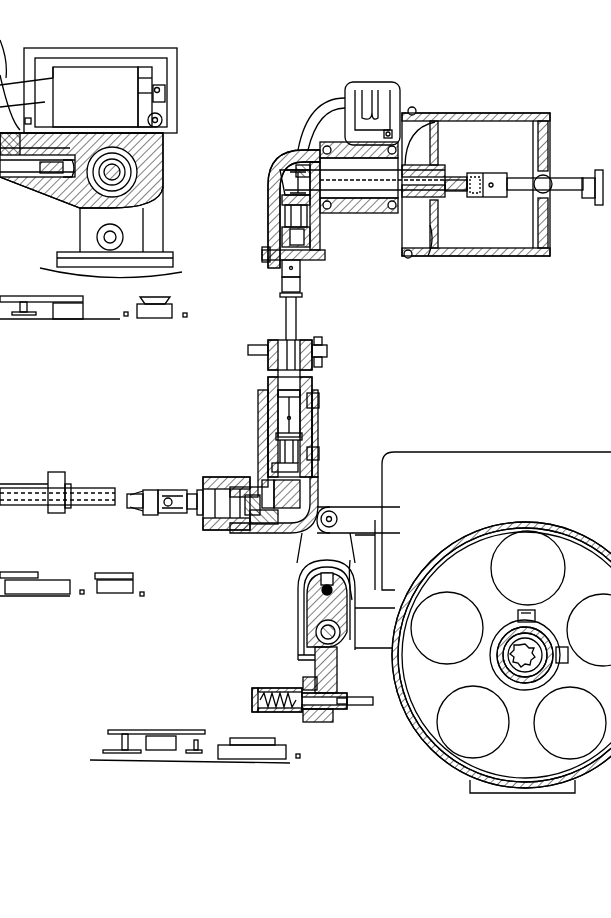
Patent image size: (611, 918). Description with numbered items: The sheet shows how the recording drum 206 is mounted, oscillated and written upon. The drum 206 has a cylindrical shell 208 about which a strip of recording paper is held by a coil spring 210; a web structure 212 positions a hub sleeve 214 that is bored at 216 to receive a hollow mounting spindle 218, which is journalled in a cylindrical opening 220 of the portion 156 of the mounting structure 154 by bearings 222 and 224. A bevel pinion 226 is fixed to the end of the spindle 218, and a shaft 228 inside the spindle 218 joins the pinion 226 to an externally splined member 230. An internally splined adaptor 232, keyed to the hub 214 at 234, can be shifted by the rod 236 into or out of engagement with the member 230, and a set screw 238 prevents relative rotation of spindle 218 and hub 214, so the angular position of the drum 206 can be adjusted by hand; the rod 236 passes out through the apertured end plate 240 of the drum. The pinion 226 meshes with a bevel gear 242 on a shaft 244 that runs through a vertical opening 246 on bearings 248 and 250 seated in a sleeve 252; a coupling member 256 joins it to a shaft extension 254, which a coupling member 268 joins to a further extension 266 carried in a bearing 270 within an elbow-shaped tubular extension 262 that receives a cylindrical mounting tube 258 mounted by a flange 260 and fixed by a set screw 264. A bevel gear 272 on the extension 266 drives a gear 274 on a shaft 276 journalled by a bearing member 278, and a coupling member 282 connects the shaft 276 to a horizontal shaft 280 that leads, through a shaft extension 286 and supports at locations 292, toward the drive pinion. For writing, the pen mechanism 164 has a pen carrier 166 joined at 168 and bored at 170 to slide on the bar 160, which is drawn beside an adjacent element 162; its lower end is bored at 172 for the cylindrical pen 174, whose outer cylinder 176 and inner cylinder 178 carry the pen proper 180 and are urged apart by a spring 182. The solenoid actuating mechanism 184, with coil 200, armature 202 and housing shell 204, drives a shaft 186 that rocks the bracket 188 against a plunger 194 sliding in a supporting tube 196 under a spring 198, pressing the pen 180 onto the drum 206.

In FIG. 6, the mounting structure 154 is at (148, 160).
In FIG. 8, the mounting structure portion 156 is at (345, 213).
In FIG. 8, the bar 160 is at (318, 624).
In FIG. 8, the housing inner wall 162 is at (325, 640).
In FIG. 8, the pen mechanism 164 is at (295, 658).
In FIG. 8, the pen carrier 166 is at (338, 666).
In FIG. 8, the joint 168 is at (335, 585).
In FIG. 8, the bore 170 is at (338, 634).
In FIG. 8, the bore 172 is at (320, 722).
In FIG. 8, the cylindrical pen 174 is at (297, 722).
In FIG. 8, the outer cylinder 176 is at (340, 695).
In FIG. 8, the inner cylinder 178 is at (352, 708).
In FIG. 8, the pen proper 180 is at (368, 700).
In FIG. 8, the spring 182 is at (255, 712).
In FIG. 6, the solenoid actuating mechanism 184 is at (112, 50).
In FIG. 8, the solenoid actuating mechanism 184 is at (497, 496).
In FIG. 8, the shaft 186 is at (355, 508).
In FIG. 8, the bracket 188 is at (318, 540).
In FIG. 6, the plunger 194 is at (30, 178).
In FIG. 6, the supporting tube 196 is at (45, 175).
In FIG. 6, the spring 198 is at (68, 178).
In FIG. 6, the solenoid coil 200 is at (112, 99).
In FIG. 6, the movable armature 202 is at (160, 72).
In FIG. 8, the movable armature 202 is at (590, 530).
In FIG. 6, the housing shell 204 is at (176, 98).
In FIG. 8, the recording drum 206 is at (488, 258).
In FIG. 8, the cylindrical shell 208 is at (510, 114).
In FIG. 8, the coil spring 210 is at (420, 105).
In FIG. 8, the web structure 212 is at (428, 238).
In FIG. 8, the hub sleeve 214 is at (474, 178).
In FIG. 8, the axial bore 216 is at (460, 197).
In FIG. 8, the mounting spindle 218 is at (421, 184).
In FIG. 8, the cylindrical opening 220 is at (362, 205).
In FIG. 8, the bearing 222 is at (380, 213).
In FIG. 8, the bearing 224 is at (330, 215).
In FIG. 8, the bevel pinion 226 is at (270, 176).
In FIG. 8, the shaft 228 is at (442, 172).
In FIG. 8, the externally splined member 230 is at (460, 176).
In FIG. 8, the internally splined adaptor 232 is at (500, 200).
In FIG. 8, the key 234 is at (548, 162).
In FIG. 8, the rod 236 is at (587, 178).
In FIG. 8, the set screw 238 is at (400, 130).
In FIG. 8, the end wall 240 is at (555, 225).
In FIG. 8, the bevel gear 242 is at (282, 186).
In FIG. 8, the shaft 244 is at (298, 240).
In FIG. 8, the vertical cylindrical opening 246 is at (283, 270).
In FIG. 8, the bearing 248 is at (290, 205).
In FIG. 8, the bearing 250 is at (285, 256).
In FIG. 8, the sleeve 252 is at (290, 220).
In FIG. 8, the shaft extension 254 is at (295, 320).
In FIG. 8, the coupling member 256 is at (302, 284).
In FIG. 8, the cylindrical mounting tube 258 is at (312, 380).
In FIG. 8, the flange 260 is at (327, 350).
In FIG. 8, the elbow-shaped tubular extension 262 is at (300, 415).
In FIG. 8, the set screw 264 is at (319, 398).
In FIG. 8, the shaft extension 266 is at (294, 420).
In FIG. 8, the coupling member 268 is at (258, 405).
In FIG. 8, the bearing 270 is at (312, 452).
In FIG. 8, the bevel gear 272 is at (292, 492).
In FIG. 8, the gear 274 is at (256, 536).
In FIG. 8, the shaft 276 is at (227, 480).
In FIG. 8, the bearing member 278 is at (207, 530).
In FIG. 7, the horizontal shaft 280 is at (85, 488).
In FIG. 7, the coupling member 282 is at (145, 490).
In FIG. 7, the shaft extension 286 is at (15, 488).
In FIG. 7, the support means locations 292 is at (58, 472).